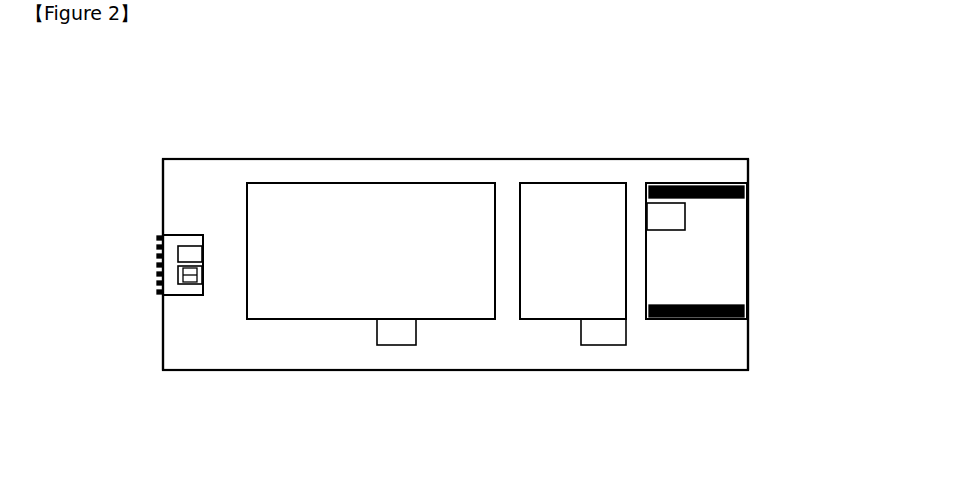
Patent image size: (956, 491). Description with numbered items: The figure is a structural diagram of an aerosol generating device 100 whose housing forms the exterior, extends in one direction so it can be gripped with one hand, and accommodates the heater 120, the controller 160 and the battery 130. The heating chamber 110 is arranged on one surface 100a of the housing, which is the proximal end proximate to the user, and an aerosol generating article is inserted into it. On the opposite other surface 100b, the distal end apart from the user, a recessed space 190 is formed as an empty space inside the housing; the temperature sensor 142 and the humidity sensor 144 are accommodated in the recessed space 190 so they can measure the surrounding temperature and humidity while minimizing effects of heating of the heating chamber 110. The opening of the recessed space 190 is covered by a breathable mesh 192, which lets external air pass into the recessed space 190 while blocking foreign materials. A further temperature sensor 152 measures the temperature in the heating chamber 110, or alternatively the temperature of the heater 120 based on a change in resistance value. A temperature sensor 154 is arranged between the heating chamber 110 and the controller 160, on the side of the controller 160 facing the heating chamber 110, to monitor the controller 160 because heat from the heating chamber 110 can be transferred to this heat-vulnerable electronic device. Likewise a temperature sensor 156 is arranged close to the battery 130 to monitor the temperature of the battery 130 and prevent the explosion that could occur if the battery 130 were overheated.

The aerosol generating device 100 is at (760, 383).
The one surface of the housing 100a is at (749, 166).
The other surface of the housing 100b is at (157, 160).
The heating chamber 110 is at (697, 186).
The heater 120 is at (718, 319).
The battery 130 is at (370, 182).
The temperature sensor 142 is at (192, 246).
The humidity sensor 144 is at (192, 284).
The temperature sensor 152 is at (660, 231).
The temperature sensor 154 is at (600, 345).
The temperature sensor 156 is at (397, 345).
The controller 160 is at (588, 182).
The recessed space 190 is at (182, 296).
The mesh 192 is at (158, 280).